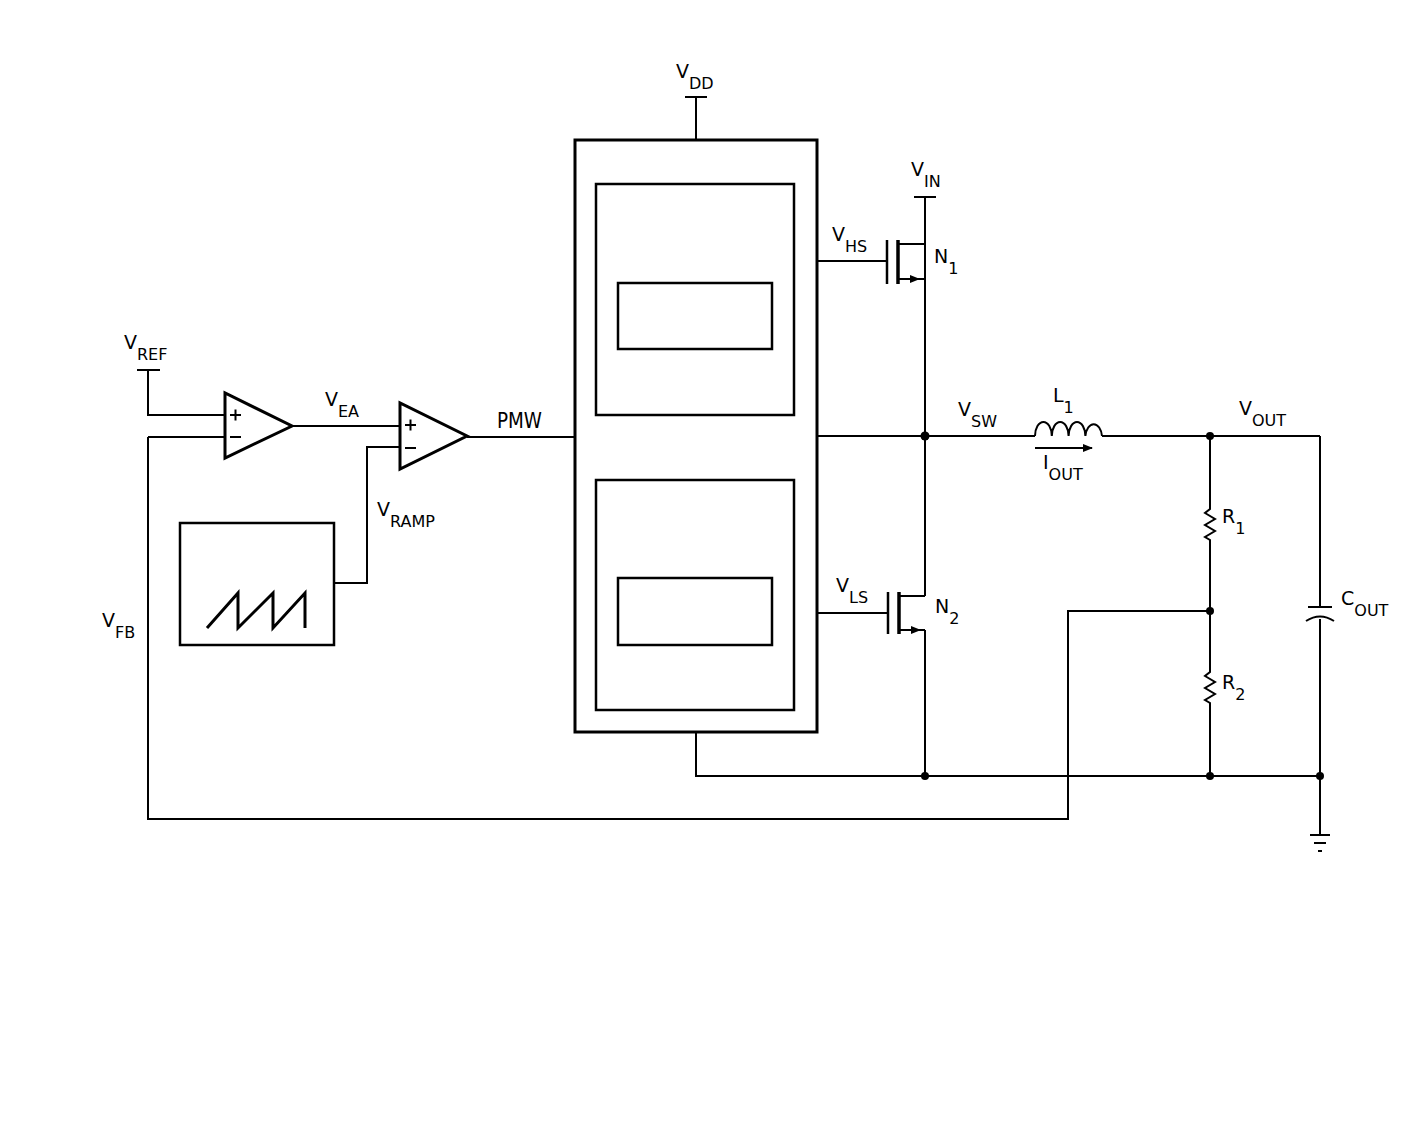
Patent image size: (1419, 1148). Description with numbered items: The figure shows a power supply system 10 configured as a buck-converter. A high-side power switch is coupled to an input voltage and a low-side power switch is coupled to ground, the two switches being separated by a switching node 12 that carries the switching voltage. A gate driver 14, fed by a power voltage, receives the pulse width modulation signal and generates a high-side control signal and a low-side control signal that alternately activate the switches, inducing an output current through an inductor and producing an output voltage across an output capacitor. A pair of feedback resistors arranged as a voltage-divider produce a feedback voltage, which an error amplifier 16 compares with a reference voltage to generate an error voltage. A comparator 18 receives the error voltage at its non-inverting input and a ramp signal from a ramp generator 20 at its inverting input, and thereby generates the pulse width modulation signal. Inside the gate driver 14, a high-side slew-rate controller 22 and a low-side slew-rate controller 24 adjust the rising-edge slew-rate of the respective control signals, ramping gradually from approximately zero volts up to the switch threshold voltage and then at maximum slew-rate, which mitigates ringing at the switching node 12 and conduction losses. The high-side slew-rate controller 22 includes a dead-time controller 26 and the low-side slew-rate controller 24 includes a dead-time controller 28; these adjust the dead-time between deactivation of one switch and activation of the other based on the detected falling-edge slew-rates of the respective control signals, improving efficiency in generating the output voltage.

The power supply system 10 is at (1242, 210).
The switching node 12 is at (921, 433).
The gate driver 14 is at (626, 135).
The error amplifier 16 is at (266, 412).
The comparator 18 is at (445, 424).
The ramp generator 20 is at (257, 646).
The high-side slew-rate controller 22 is at (673, 416).
The low-side slew-rate controller 24 is at (717, 480).
The dead-time controller 26 is at (695, 350).
The dead-time controller 28 is at (695, 646).